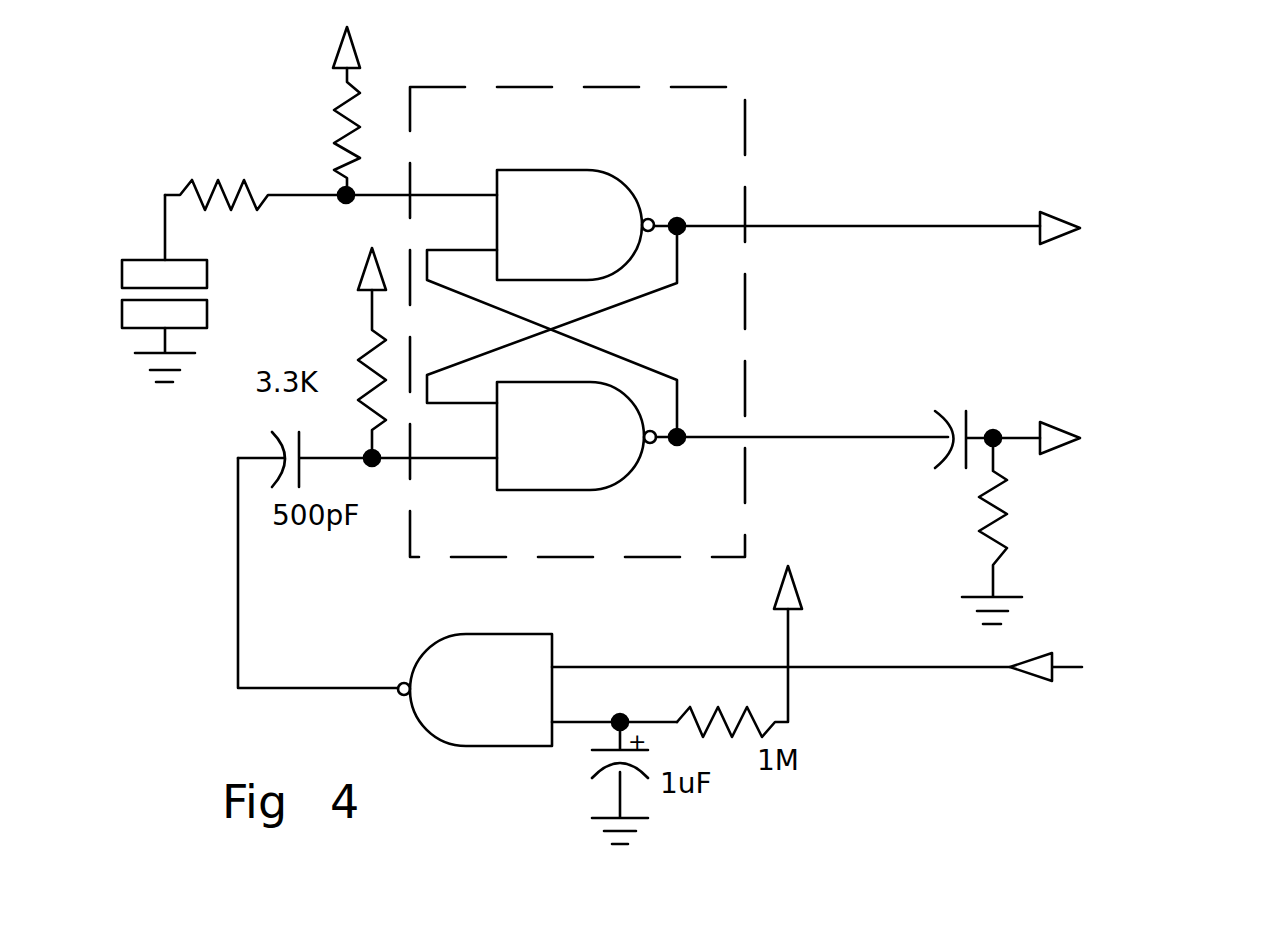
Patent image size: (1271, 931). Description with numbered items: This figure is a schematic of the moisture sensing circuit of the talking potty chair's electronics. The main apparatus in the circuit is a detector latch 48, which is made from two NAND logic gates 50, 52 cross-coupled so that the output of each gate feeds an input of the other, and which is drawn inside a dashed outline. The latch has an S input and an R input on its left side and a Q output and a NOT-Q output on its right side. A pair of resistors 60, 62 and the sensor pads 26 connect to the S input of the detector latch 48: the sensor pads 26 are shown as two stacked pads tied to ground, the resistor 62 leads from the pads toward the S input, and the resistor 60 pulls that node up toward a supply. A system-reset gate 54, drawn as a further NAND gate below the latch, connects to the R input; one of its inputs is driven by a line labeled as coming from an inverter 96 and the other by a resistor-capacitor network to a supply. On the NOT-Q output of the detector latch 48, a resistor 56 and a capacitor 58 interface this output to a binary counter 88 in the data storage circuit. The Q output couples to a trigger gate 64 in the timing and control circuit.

The sensor pads 26 is at (122, 317).
The detector latch 48 is at (751, 294).
The NAND logic gate 50 is at (507, 170).
The NAND logic gate 52 is at (592, 490).
The system-reset gate 54 is at (452, 636).
The resistor 56 is at (1009, 486).
The capacitor 58 is at (957, 470).
The resistor 60 is at (332, 157).
The resistor 62 is at (262, 184).
The trigger gate 64 is at (1125, 262).
The binary counter 88 is at (1132, 460).
The inverter 96 is at (1117, 681).